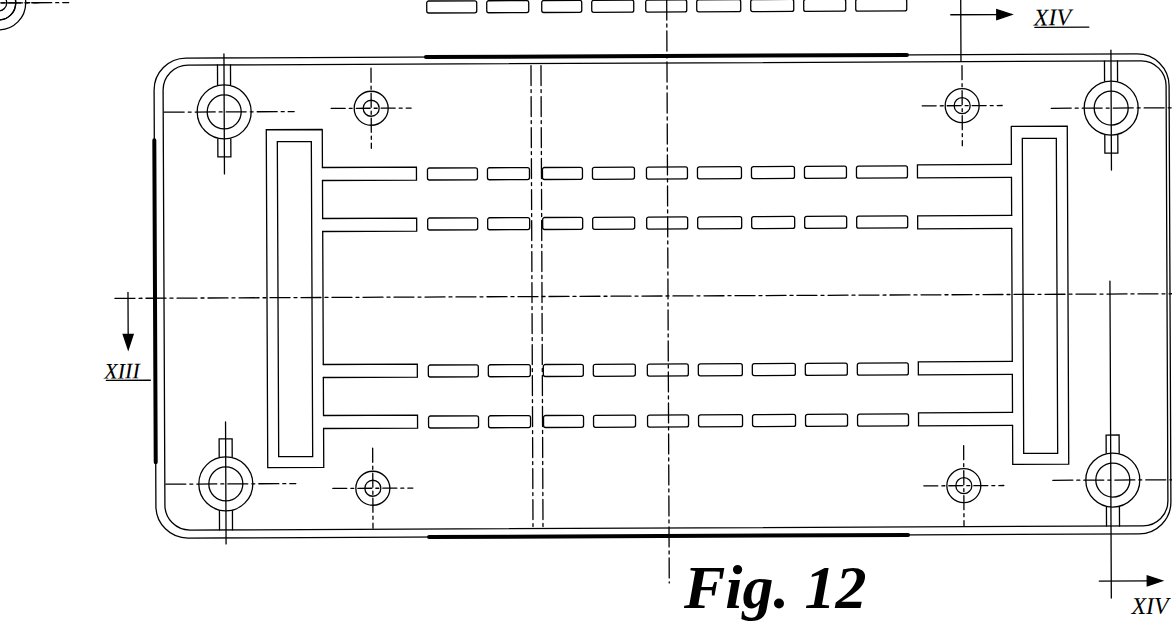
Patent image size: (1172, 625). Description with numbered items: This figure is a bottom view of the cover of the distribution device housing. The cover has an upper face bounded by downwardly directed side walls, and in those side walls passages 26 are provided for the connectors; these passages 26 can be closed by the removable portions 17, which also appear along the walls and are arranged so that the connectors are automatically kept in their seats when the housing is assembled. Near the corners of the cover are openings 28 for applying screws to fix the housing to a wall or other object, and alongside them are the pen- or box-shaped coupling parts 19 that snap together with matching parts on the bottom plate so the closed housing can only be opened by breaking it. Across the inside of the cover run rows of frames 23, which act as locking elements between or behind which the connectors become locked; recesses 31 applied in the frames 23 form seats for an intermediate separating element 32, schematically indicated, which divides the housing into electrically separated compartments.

The removable portion 17 is at (470, 56).
The coupling part 19 is at (386, 120).
The frame 23 is at (815, 166).
The passage 26 is at (157, 228).
The opening 28 is at (244, 106).
The recess 31 is at (480, 230).
The intermediate separating element 32 is at (548, 340).